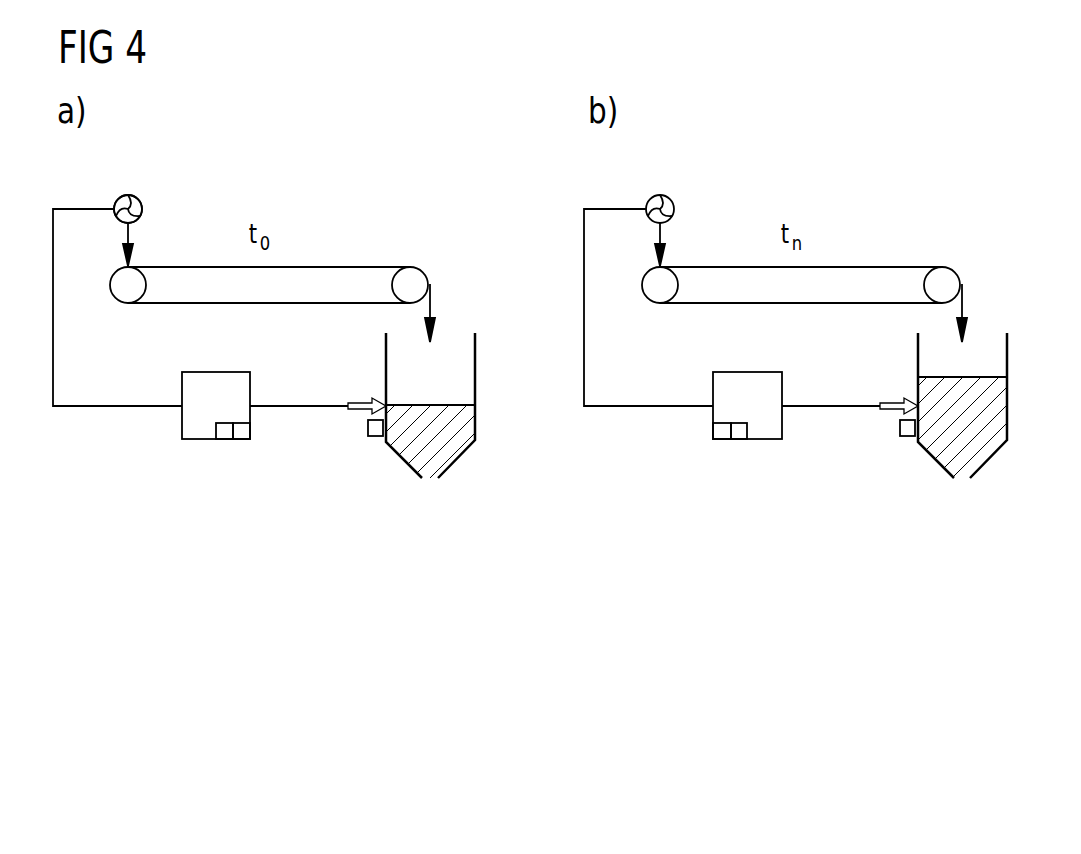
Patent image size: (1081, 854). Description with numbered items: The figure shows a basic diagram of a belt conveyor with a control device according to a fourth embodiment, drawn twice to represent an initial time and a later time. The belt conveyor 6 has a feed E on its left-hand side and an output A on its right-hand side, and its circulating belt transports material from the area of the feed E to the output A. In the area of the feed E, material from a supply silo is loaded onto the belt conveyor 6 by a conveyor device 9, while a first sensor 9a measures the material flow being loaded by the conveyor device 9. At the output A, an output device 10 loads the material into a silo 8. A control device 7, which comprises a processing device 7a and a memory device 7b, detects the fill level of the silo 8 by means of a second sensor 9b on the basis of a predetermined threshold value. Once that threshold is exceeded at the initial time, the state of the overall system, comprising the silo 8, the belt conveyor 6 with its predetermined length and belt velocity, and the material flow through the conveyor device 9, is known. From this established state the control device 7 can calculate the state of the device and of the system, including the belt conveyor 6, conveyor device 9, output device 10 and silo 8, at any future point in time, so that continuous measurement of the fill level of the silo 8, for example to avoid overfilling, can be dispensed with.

The belt conveyor 6 is at (300, 277).
The control device 7 is at (192, 424).
The processing device 7a is at (223, 440).
The memory device 7b is at (242, 440).
The silo 8 is at (466, 417).
The conveyor device 9 is at (124, 196).
The first sensor 9a is at (134, 196).
The second sensor 9b is at (378, 437).
The output device 10 is at (421, 283).
The feed E is at (156, 249).
The output A is at (416, 249).